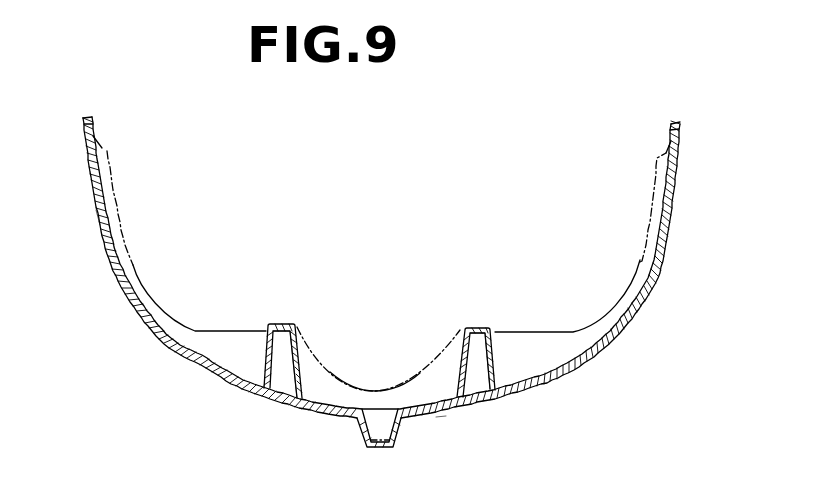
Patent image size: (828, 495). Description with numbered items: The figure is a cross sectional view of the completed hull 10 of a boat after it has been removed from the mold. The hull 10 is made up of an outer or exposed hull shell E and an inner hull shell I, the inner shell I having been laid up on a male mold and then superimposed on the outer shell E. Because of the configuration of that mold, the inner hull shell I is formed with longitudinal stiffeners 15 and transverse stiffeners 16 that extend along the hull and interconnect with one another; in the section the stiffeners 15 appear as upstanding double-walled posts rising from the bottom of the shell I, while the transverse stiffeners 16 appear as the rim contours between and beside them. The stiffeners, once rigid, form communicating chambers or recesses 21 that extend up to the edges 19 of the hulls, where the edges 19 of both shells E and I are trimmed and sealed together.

The hull 10 is at (668, 225).
The edges 19 is at (86, 117).
The transverse stiffeners 16 is at (212, 330).
The longitudinal stiffeners 15 is at (287, 325).
The chambers 21 is at (283, 377).
The outer hull shell E is at (98, 219).
The inner hull shell I is at (127, 245).